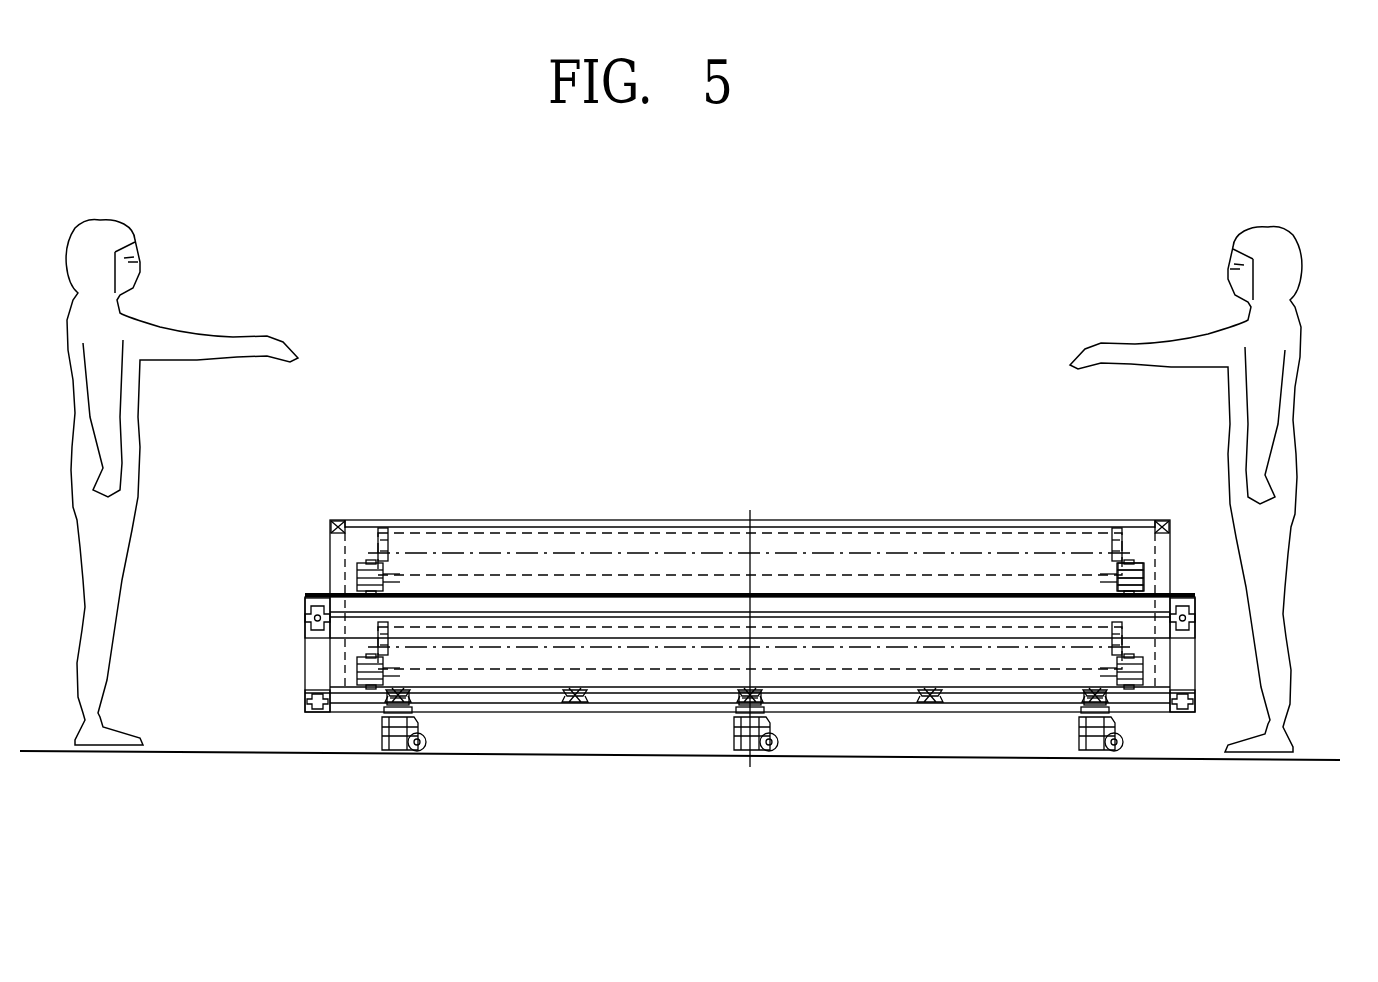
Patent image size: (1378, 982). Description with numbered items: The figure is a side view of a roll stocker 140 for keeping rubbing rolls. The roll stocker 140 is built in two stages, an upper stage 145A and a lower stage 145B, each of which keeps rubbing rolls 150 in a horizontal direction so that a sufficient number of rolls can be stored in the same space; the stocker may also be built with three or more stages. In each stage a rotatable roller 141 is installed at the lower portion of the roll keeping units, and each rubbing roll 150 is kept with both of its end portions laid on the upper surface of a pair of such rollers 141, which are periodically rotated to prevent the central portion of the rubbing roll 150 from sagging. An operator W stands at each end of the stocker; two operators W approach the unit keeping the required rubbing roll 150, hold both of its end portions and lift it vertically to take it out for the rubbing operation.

The roll stocker 140 is at (432, 426).
The rotatable roller 141 is at (1136, 570).
The rubbing roll 150 is at (912, 540).
The upper stage 145A is at (289, 517).
The lower stage 145B is at (289, 597).
The operator W is at (1290, 359).